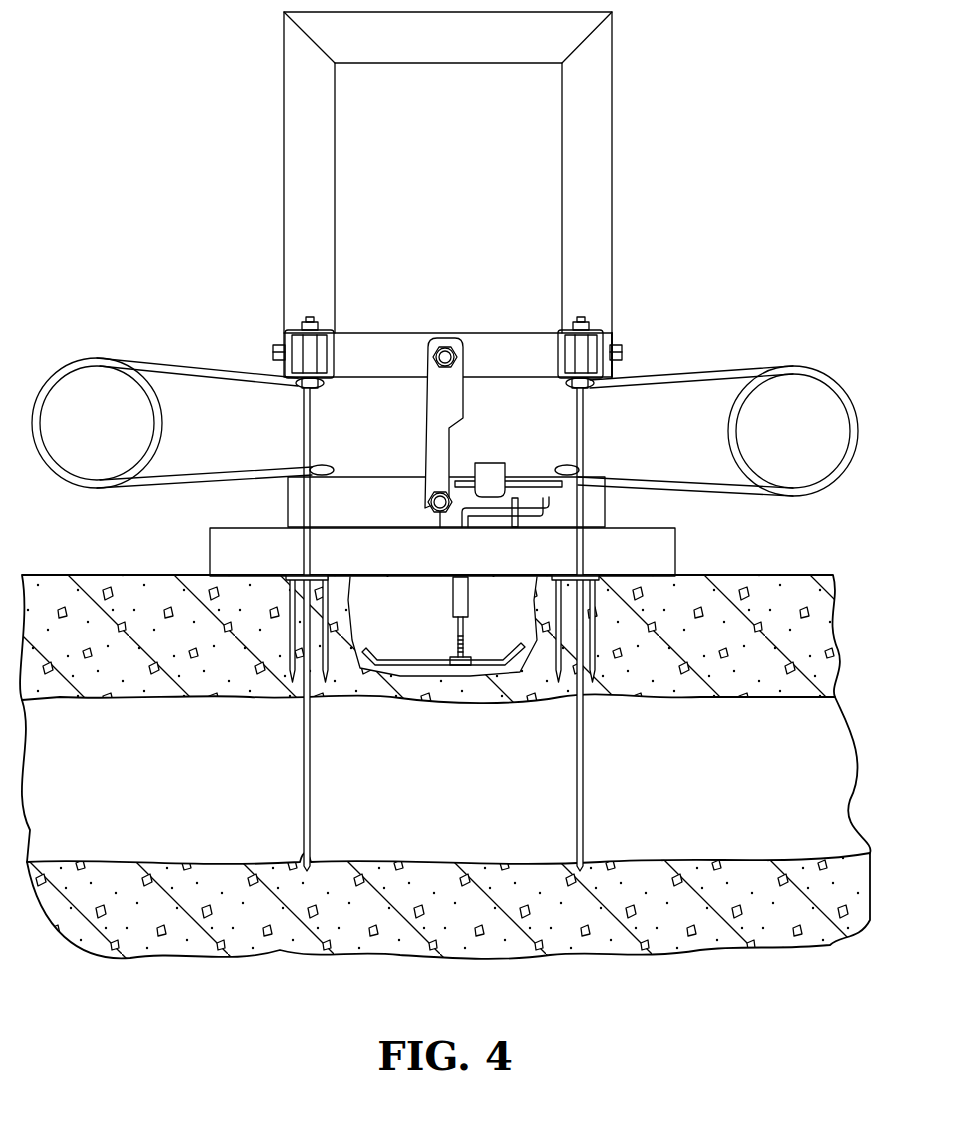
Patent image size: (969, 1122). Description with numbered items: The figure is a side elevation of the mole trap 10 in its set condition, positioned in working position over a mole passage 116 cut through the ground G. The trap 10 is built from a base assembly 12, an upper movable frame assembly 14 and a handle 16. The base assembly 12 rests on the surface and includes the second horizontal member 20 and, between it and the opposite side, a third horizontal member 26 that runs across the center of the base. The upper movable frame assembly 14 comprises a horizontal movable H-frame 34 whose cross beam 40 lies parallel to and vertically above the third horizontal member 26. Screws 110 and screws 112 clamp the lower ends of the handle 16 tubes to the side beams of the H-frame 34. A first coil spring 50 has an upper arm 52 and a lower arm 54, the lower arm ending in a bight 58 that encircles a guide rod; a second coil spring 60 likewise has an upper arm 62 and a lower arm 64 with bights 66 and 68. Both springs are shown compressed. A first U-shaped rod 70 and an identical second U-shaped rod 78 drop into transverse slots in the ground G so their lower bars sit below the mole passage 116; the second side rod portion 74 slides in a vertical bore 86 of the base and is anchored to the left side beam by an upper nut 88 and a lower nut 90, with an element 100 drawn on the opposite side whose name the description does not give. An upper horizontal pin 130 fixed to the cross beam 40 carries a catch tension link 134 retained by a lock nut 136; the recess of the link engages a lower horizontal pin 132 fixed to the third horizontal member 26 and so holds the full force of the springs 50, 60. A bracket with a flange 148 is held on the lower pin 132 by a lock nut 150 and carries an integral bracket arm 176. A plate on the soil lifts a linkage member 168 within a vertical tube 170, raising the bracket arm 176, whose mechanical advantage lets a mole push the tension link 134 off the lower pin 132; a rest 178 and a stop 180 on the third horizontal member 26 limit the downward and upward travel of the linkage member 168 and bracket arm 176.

The mole trap 10 is at (193, 106).
The base assembly 12 is at (784, 545).
The upper movable frame assembly 14 is at (208, 322).
The handle 16 is at (613, 155).
The second horizontal member 20 is at (694, 546).
The third horizontal member 26 is at (286, 490).
The horizontal movable H-frame 34 is at (612, 340).
The cross beam 40 is at (370, 332).
The first coil spring 50 is at (62, 372).
The upper arm 52 is at (148, 358).
The lower arm 54 is at (192, 478).
The bight 58 is at (320, 468).
The second coil spring 60 is at (845, 378).
The upper arm 62 is at (740, 370).
The lower arm 64 is at (718, 482).
The bight 66 is at (562, 386).
The bight 68 is at (570, 468).
The first U-shaped rod 70 is at (302, 788).
The second side rod portion 74 is at (302, 440).
The second U-shaped rod 78 is at (587, 396).
The vertical bore 86 is at (288, 512).
The upper nut 88 is at (290, 328).
The lower nut 90 is at (294, 386).
The bearing block 100 is at (590, 326).
The screws 110 is at (275, 352).
The screws 112 is at (622, 355).
The mole passage 116 is at (78, 860).
The upper horizontal pin 130 is at (444, 345).
The lower horizontal pin 132 is at (430, 496).
The catch tension link 134 is at (425, 393).
The lock nut 136 is at (458, 346).
The flange 148 is at (426, 527).
The lock nut 150 is at (448, 494).
The linkage member 168 is at (450, 627).
The vertical tube 170 is at (452, 607).
The bracket arm 176 is at (524, 480).
The rest 178 is at (502, 530).
The stop 180 is at (488, 463).
The ground G is at (87, 572).